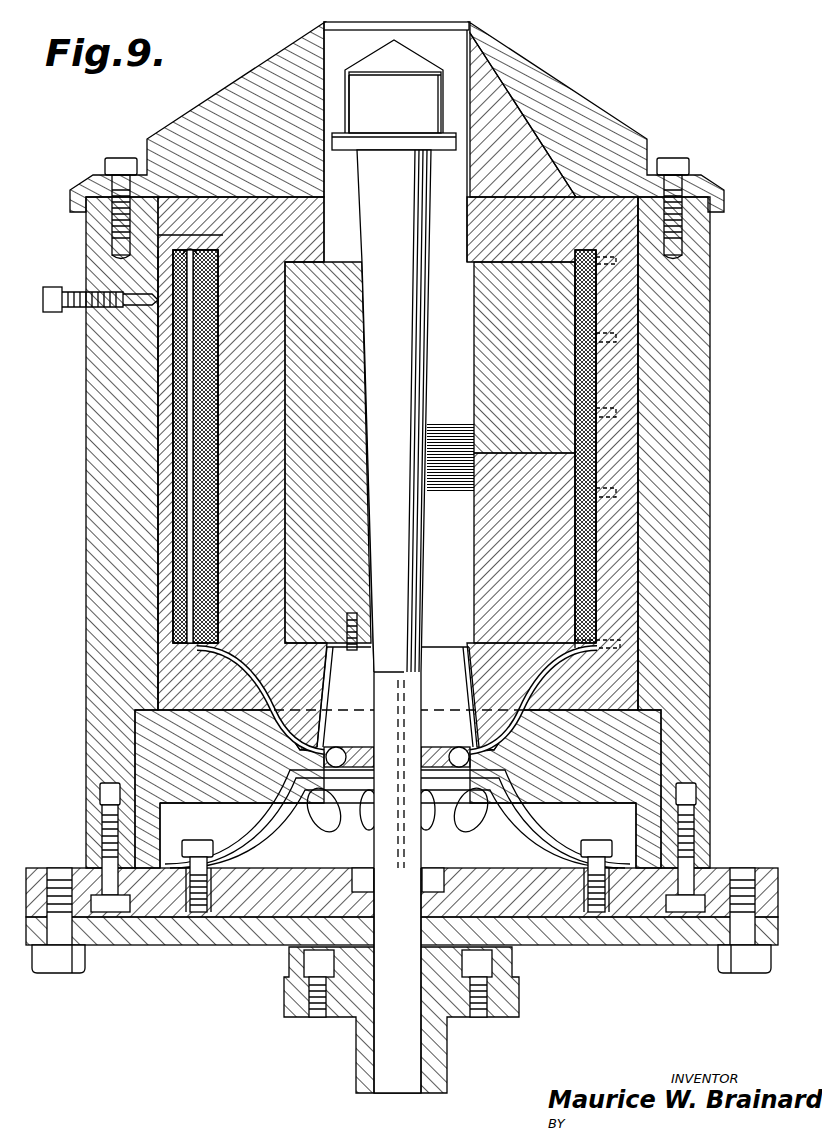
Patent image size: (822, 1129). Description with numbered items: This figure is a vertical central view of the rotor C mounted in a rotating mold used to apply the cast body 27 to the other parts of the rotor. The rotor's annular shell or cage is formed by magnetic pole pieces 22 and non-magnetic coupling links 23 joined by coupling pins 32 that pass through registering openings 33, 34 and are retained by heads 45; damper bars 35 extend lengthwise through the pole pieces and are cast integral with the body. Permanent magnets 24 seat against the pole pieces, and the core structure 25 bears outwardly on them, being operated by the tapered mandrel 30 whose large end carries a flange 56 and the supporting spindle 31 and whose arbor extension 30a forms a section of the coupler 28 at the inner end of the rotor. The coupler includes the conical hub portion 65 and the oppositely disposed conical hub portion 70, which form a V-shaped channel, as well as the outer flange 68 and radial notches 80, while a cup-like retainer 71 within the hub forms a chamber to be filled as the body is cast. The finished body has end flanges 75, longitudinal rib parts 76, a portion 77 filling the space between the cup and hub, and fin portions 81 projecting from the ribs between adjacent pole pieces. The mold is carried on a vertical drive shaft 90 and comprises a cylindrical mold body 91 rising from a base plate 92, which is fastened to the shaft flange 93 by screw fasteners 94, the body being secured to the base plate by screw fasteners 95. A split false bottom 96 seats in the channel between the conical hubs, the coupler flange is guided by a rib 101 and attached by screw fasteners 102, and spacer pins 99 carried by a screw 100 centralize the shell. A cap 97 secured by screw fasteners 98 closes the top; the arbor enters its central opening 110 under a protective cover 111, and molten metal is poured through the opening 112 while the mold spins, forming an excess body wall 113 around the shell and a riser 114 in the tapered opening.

The magnetic pole pieces 22 is at (173, 528).
The non-magnetic coupling links 23 is at (173, 490).
The permanent magnets 24 is at (507, 332).
The core structure 25 is at (339, 387).
The body of non-magnetic material 27 is at (631, 670).
The coupler 28 is at (553, 832).
The tapered mandrel 30 is at (397, 427).
The arbor extension 30a is at (399, 902).
The supporting spindle 31 is at (395, 102).
The coupling pins 32 is at (190, 377).
The openings in the pole pieces 33 is at (192, 432).
The openings in the links 34 is at (173, 570).
The damper bars 35 is at (615, 303).
The heads 45 is at (187, 655).
The flange 56 is at (381, 140).
The conical hub portion 65 is at (287, 723).
The outer flange 68 is at (253, 840).
The conical hub portion 70 is at (504, 783).
The cup-like retainer 71 is at (461, 660).
The end flanges 75 is at (160, 237).
The longitudinal rib parts 76 is at (274, 510).
The portion of the body 77 is at (496, 677).
The radial notches 80 is at (487, 710).
The fin portions 81 is at (611, 567).
The vertical drive shaft 90 is at (367, 1073).
The cylindrical mold body 91 is at (695, 530).
The base plate 92 is at (82, 878).
The shaft flange 93 is at (157, 937).
The screw fasteners 94 is at (63, 962).
The screw fasteners 95 is at (690, 870).
The false bottom 96 is at (645, 750).
The cap 97 is at (607, 123).
The screw fasteners 98 is at (118, 165).
The spacer pins 99 is at (153, 303).
The screw 100 is at (45, 300).
The rib 101 is at (172, 862).
The screw fasteners 102 is at (208, 843).
The central opening 110 is at (490, 90).
The protective cover 111 is at (440, 55).
The central opening 112 is at (328, 24).
The excess body wall 113 is at (628, 415).
The riser 114 is at (497, 127).
The rotor C is at (606, 370).